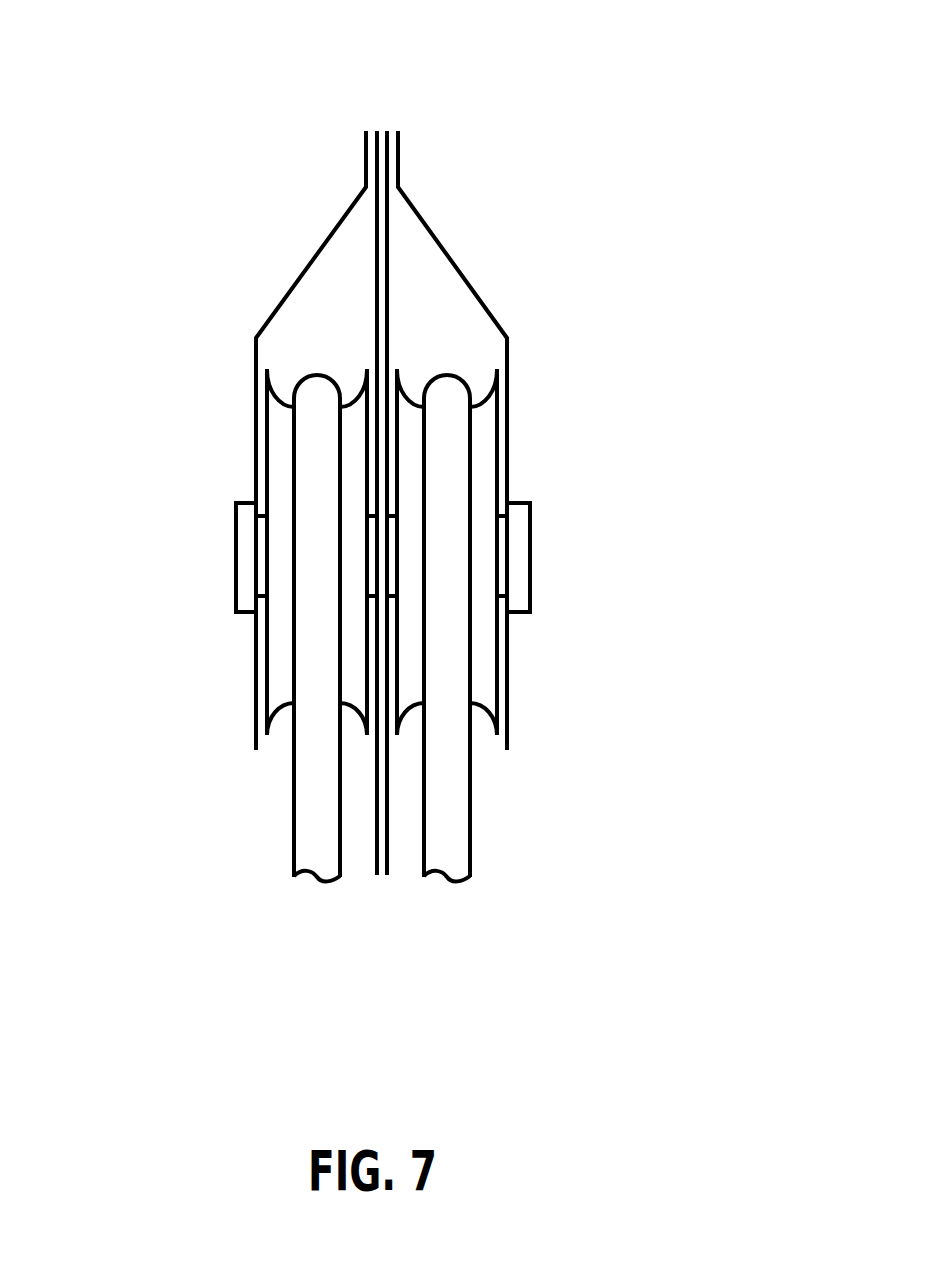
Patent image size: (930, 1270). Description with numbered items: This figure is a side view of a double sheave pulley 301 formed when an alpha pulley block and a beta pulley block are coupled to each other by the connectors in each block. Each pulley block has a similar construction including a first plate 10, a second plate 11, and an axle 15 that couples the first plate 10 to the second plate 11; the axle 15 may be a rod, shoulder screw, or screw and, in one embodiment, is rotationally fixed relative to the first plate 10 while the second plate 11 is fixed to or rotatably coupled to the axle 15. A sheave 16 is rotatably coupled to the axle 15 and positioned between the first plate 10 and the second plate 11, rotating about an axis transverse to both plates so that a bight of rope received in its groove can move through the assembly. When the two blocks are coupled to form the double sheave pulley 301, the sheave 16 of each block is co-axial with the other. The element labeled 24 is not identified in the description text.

The double sheave pulley 301 is at (443, 97).
The first plate 10 is at (377, 278).
The second plate 11 is at (253, 385).
The axle 15 is at (236, 571).
The sheave 16 is at (277, 657).
The tube 24 is at (445, 880).